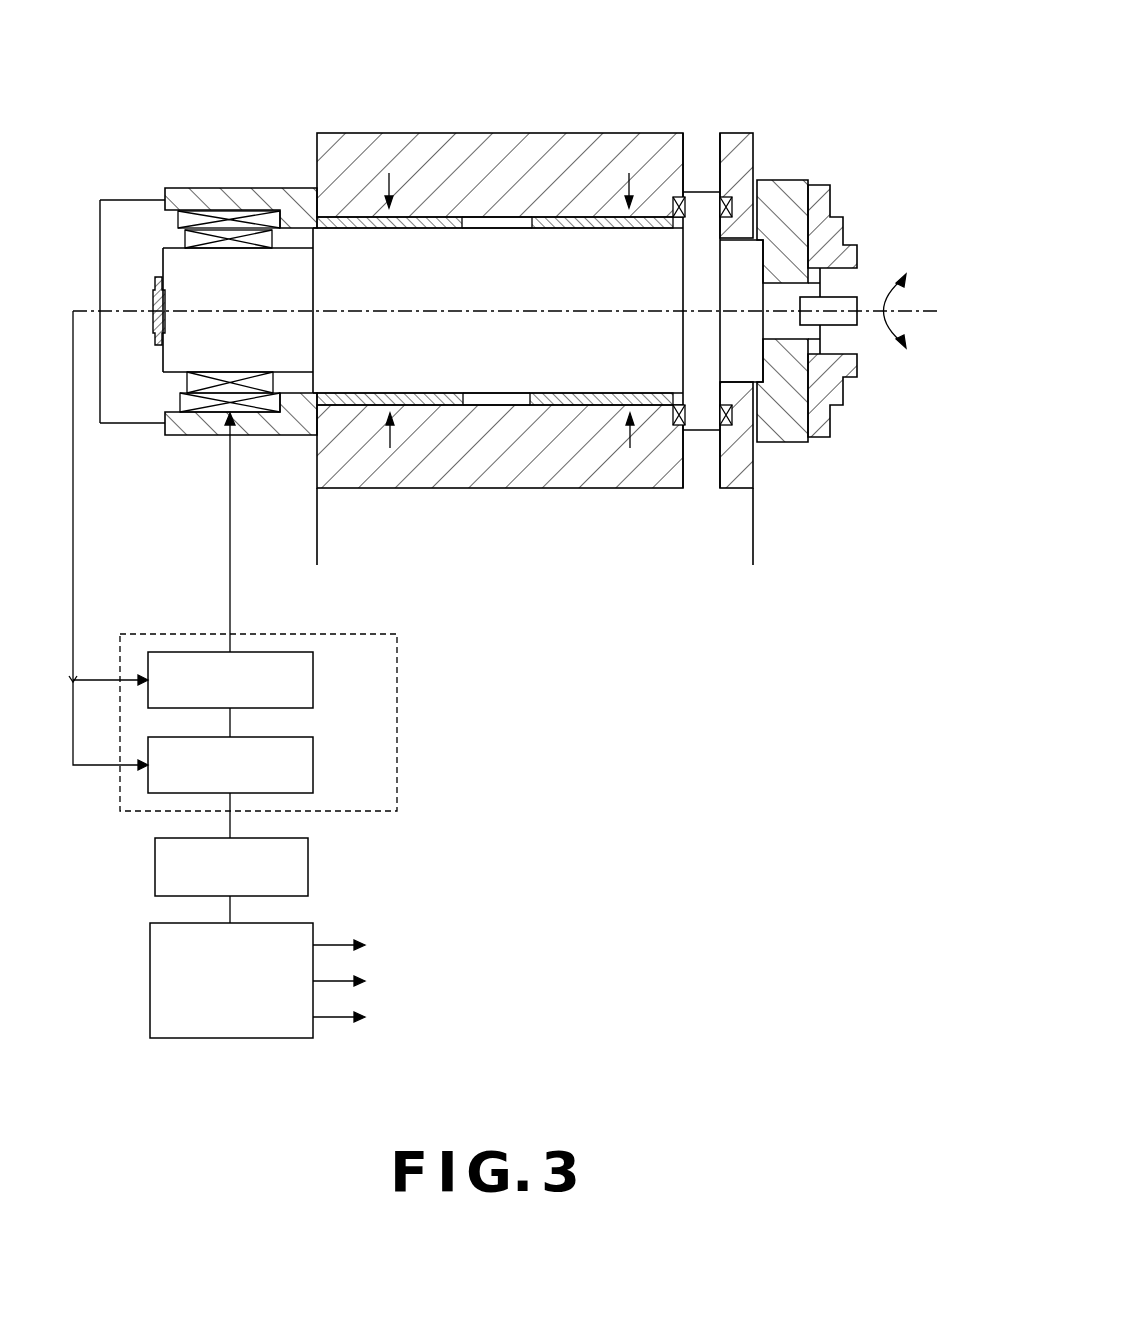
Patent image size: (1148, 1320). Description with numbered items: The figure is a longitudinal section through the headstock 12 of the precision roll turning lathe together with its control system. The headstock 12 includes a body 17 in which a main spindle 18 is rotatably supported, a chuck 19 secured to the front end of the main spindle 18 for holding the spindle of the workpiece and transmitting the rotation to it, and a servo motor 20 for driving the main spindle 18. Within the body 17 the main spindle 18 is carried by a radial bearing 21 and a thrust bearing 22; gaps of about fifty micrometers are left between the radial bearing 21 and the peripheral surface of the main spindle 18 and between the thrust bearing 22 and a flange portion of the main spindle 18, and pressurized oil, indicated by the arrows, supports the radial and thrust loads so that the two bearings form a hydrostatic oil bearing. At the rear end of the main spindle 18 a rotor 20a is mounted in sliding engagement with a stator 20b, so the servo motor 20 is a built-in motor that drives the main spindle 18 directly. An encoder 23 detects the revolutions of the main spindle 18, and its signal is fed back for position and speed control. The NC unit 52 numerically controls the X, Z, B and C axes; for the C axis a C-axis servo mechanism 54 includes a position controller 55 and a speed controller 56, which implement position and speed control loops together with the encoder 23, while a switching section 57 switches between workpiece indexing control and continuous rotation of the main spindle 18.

The headstock 12 is at (652, 105).
The body 17 is at (516, 155).
The main spindle 18 is at (508, 370).
The chuck 19 is at (833, 383).
The servo motor 20 is at (237, 334).
The rotor 20a is at (230, 374).
The stator 20b is at (222, 408).
The radial bearing 21 is at (348, 215).
The thrust bearing 22 is at (650, 207).
The encoder 23 is at (150, 297).
The NC unit 52 is at (225, 1040).
The C-axis servo mechanism 54 is at (297, 722).
The position controller 55 is at (315, 766).
The speed controller 56 is at (315, 683).
The switching section 57 is at (310, 864).